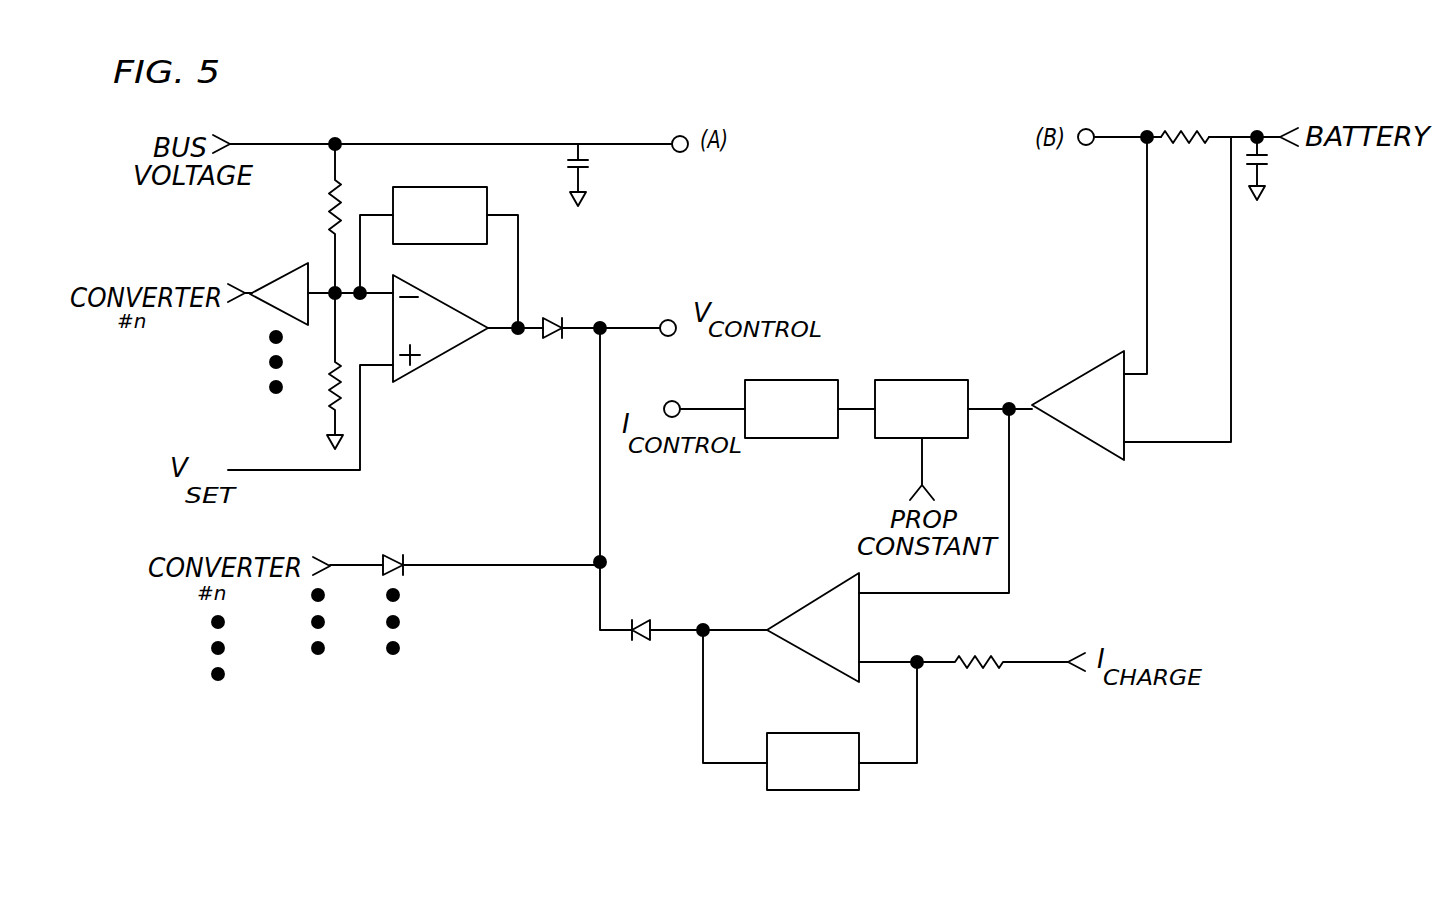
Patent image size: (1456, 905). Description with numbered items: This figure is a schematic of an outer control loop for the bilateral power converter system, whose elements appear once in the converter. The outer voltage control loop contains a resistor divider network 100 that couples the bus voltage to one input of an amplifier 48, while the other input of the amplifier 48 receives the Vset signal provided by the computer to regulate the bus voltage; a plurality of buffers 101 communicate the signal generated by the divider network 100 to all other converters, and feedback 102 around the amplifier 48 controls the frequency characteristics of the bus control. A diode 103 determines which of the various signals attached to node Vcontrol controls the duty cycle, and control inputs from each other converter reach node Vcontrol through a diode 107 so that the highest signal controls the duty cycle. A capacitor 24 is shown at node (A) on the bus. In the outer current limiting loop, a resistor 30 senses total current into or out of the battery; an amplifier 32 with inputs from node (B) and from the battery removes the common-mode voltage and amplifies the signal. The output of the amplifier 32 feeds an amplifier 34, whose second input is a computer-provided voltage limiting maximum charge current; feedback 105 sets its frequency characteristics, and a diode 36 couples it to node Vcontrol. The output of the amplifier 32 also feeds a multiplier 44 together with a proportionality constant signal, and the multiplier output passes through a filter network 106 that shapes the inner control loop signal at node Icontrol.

The capacitor 24 is at (595, 162).
The resistor 30 is at (1184, 123).
The amplifier 32 is at (1098, 367).
The amplifier 34 is at (820, 595).
The diode 36 is at (640, 618).
The multiplier 44 is at (942, 438).
The amplifier 48 is at (423, 365).
The resistor divider network 100 is at (346, 191).
The buffers 101 is at (287, 275).
The feedback 102 is at (417, 245).
The diode 103 is at (550, 313).
The feedback 105 is at (810, 790).
The filter network 106 is at (792, 438).
The diode 107 is at (390, 555).